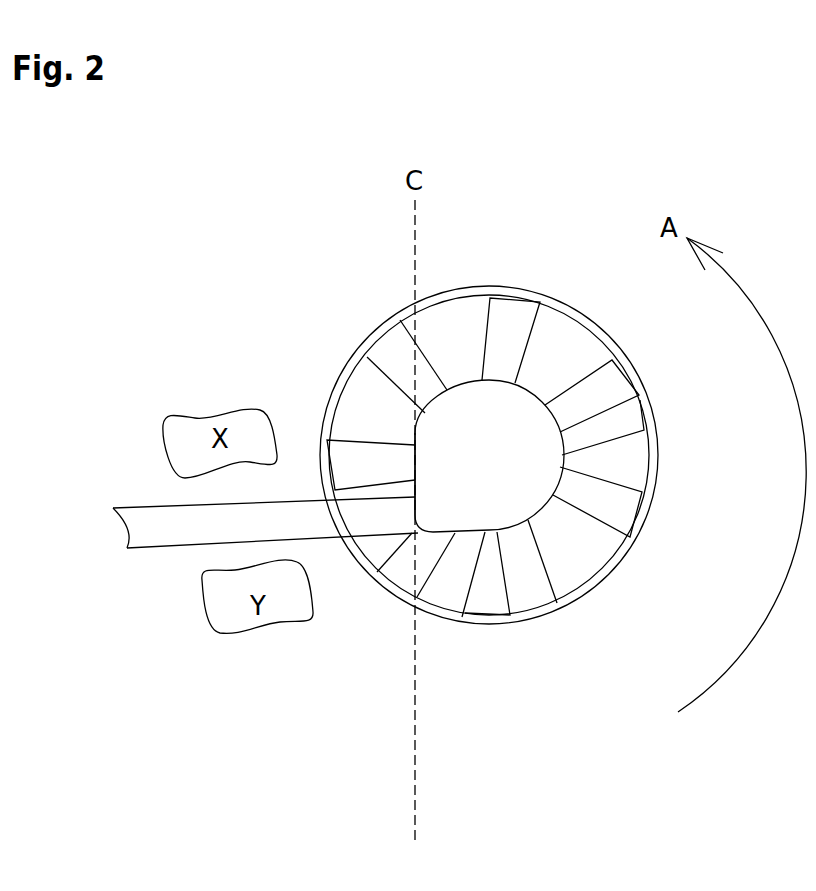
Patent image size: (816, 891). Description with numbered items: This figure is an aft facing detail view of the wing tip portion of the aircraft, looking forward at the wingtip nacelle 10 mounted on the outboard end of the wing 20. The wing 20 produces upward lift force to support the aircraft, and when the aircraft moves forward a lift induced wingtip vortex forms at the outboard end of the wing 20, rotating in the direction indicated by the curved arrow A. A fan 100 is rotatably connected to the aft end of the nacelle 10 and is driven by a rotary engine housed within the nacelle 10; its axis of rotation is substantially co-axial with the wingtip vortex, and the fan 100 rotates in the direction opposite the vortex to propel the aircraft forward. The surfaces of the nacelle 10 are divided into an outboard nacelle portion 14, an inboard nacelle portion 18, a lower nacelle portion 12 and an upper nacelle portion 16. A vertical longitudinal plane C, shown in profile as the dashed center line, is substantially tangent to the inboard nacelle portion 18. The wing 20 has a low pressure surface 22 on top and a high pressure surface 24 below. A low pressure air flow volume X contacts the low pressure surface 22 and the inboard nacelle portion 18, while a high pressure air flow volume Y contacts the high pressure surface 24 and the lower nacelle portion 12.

The fan 100 is at (387, 293).
The wingtip nacelle 10 is at (545, 517).
The lower nacelle portion 12 is at (462, 617).
The outboard nacelle portion 14 is at (644, 405).
The upper nacelle portion 16 is at (485, 372).
The inboard nacelle portion 18 is at (413, 463).
The wing 20 is at (120, 528).
The low pressure surface 22 is at (145, 507).
The high pressure surface 24 is at (173, 547).